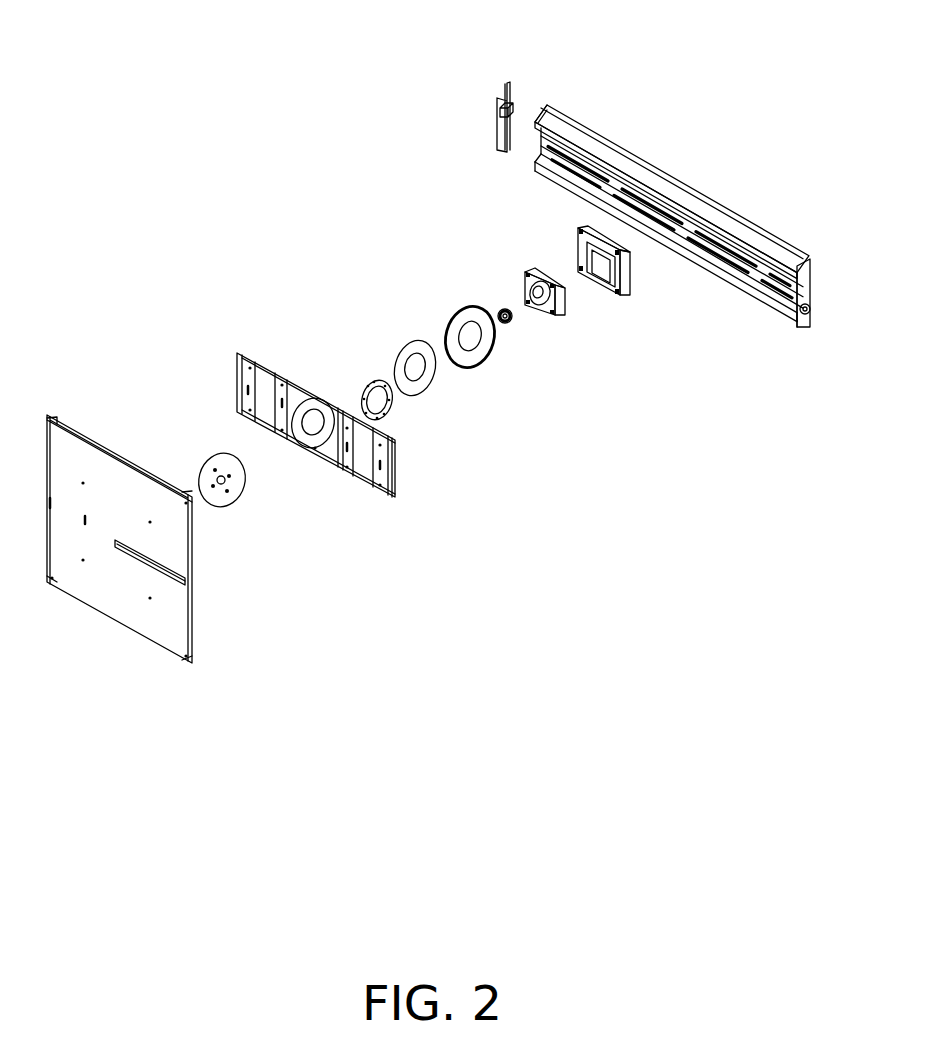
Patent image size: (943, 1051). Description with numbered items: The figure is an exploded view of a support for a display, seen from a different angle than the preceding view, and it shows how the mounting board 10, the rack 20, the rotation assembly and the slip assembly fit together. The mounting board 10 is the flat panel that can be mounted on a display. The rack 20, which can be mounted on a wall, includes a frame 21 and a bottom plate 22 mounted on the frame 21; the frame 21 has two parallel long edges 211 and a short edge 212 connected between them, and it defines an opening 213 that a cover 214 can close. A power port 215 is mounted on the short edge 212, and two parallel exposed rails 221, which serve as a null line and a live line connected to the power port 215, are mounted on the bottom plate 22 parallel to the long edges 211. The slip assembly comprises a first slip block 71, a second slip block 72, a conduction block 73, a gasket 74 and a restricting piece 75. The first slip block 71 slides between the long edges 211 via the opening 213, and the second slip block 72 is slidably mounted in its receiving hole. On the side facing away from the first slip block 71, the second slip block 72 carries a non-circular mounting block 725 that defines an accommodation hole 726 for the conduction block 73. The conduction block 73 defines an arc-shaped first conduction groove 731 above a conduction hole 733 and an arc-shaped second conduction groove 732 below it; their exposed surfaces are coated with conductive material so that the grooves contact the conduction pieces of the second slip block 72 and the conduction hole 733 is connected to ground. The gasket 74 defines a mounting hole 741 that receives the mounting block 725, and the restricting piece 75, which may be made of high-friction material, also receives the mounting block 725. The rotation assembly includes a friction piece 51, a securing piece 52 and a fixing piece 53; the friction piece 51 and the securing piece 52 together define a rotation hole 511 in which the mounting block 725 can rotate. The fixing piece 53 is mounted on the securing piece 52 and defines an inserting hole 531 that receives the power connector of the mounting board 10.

The mounting board 10 is at (118, 598).
The rack 20 is at (614, 126).
The frame 21 is at (573, 137).
The bottom plate 22 is at (548, 107).
The long edges 211 is at (683, 193).
The short edge 212 is at (810, 277).
The opening 213 is at (533, 143).
The cover 214 is at (500, 110).
The power port 215 is at (810, 327).
The rails 221 is at (753, 247).
The friction piece 51 is at (393, 417).
The rotation hole 511 is at (317, 425).
The securing piece 52 is at (362, 475).
The fixing piece 53 is at (238, 497).
The inserting hole 531 is at (215, 470).
The first slip block 71 is at (632, 292).
The second slip block 72 is at (563, 312).
The mounting block 725 is at (565, 307).
The accommodation hole 726 is at (538, 268).
The conduction block 73 is at (525, 312).
The first conduction groove 731 is at (503, 308).
The second conduction groove 732 is at (502, 313).
The conduction hole 733 is at (502, 312).
The gasket 74 is at (487, 350).
The mounting hole 741 is at (462, 330).
The restricting piece 75 is at (430, 393).